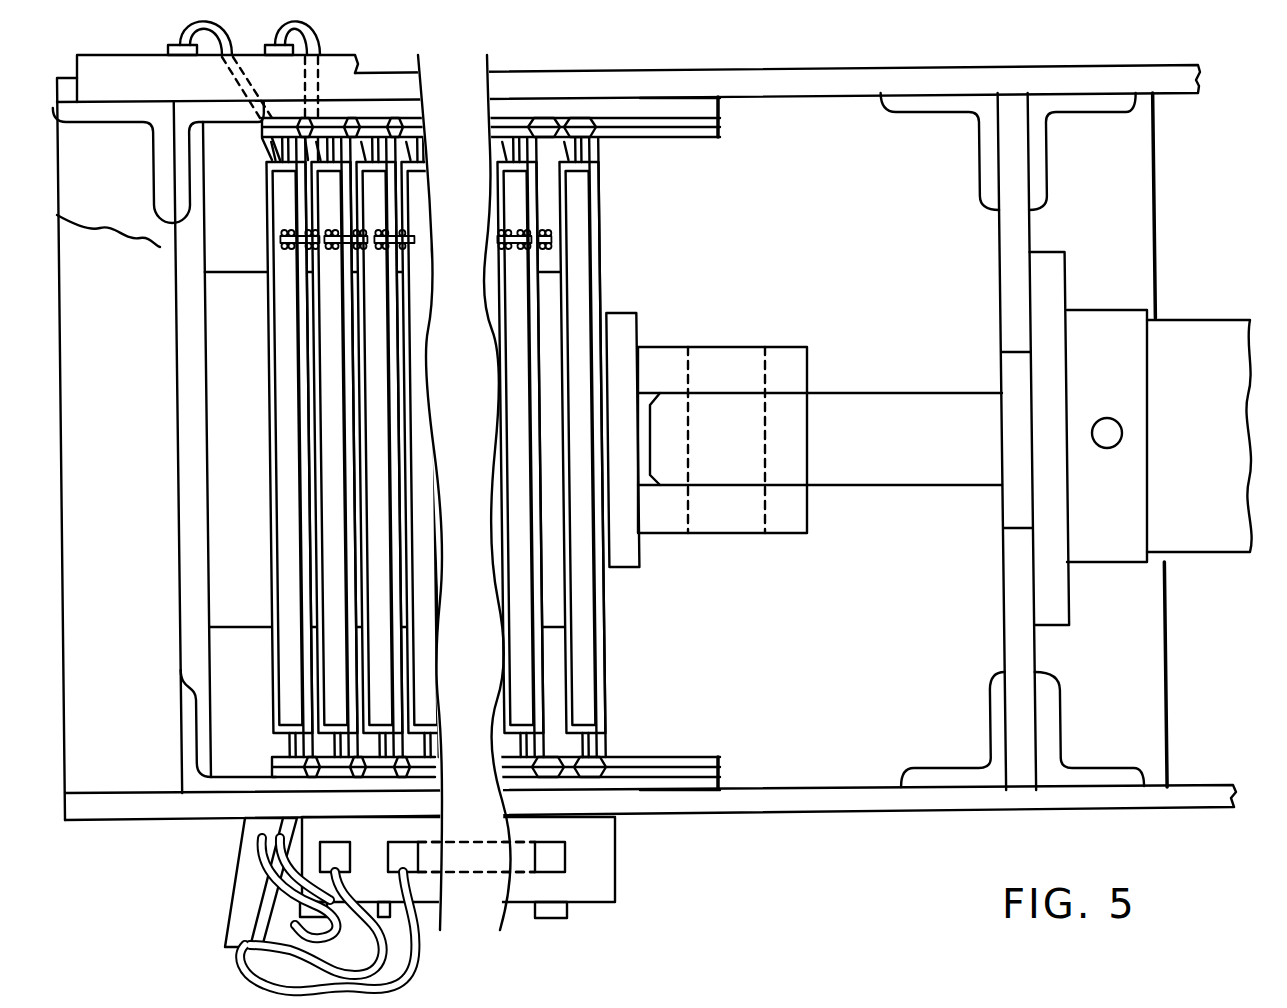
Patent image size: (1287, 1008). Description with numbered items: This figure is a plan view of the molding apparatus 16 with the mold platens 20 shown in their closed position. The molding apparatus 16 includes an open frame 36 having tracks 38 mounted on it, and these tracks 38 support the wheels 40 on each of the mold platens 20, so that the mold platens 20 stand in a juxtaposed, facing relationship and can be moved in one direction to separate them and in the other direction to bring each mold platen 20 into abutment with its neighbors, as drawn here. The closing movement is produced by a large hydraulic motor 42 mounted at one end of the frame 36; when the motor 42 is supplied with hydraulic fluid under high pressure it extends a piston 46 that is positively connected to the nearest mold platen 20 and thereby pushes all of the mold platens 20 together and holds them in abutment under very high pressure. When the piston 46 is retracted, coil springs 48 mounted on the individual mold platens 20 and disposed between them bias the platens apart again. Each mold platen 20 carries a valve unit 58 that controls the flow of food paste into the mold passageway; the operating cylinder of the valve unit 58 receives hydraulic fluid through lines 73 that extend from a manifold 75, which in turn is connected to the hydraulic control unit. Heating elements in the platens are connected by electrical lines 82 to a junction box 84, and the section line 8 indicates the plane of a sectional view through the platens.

The section line 8- 8 is at (423, 593).
The molding apparatus 16 is at (777, 828).
The mold platen 20 is at (278, 224).
The open frame 36 is at (833, 806).
The track 38 is at (715, 138).
The wheel 40 is at (586, 120).
The hydraulic motor 42 is at (1218, 322).
The piston 46 is at (898, 397).
The coil spring 48 is at (374, 232).
The valve unit 58 is at (219, 895).
The lines 73 is at (398, 960).
The manifold 75 is at (611, 889).
The electrical lines 82 is at (214, 36).
The junction box 84 is at (156, 33).